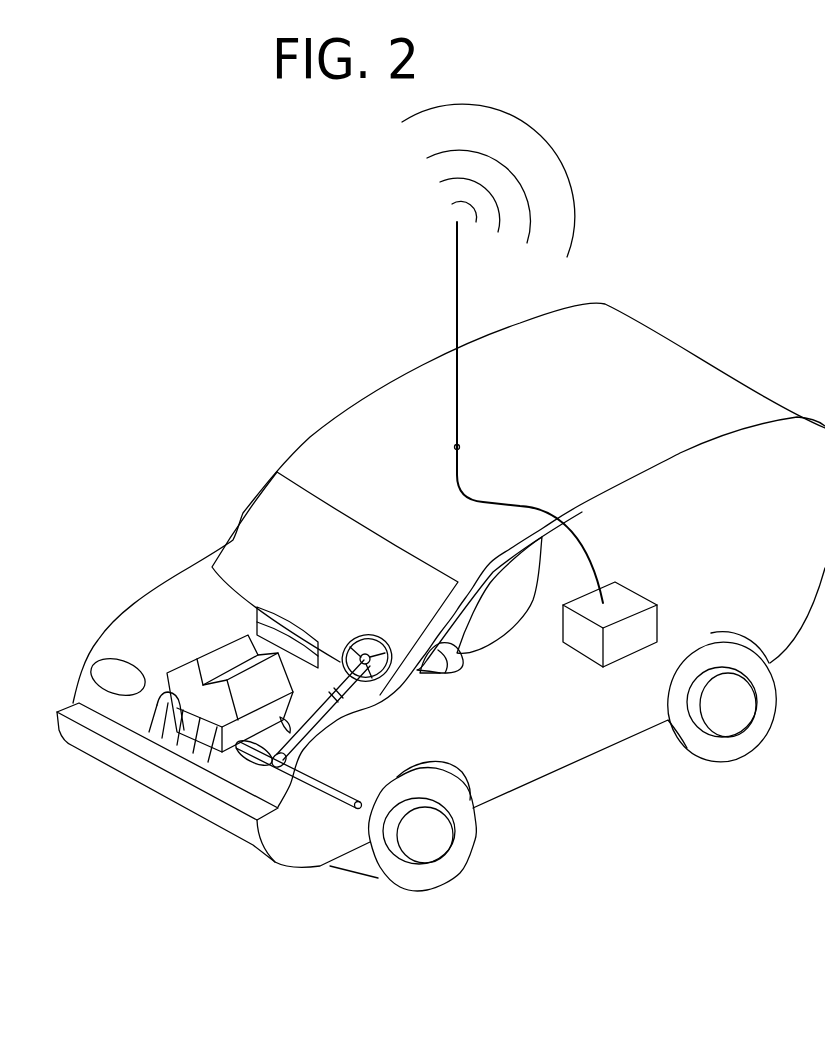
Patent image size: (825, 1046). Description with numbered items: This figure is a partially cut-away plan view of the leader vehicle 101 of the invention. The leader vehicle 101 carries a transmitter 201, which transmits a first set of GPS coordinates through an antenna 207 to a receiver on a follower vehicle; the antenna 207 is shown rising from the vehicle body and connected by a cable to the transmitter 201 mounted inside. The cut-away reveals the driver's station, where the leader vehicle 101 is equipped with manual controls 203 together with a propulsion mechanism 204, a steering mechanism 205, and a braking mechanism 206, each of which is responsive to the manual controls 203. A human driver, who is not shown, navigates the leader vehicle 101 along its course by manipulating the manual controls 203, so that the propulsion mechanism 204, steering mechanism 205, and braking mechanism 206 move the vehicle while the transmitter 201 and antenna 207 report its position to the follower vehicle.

The leader vehicle 101 is at (76, 535).
The transmitter 201 is at (632, 603).
The manual controls 203 is at (298, 630).
The propulsion mechanism 204 is at (330, 728).
The steering mechanism 205 is at (366, 636).
The braking mechanism 206 is at (433, 847).
The antenna 207 is at (457, 303).